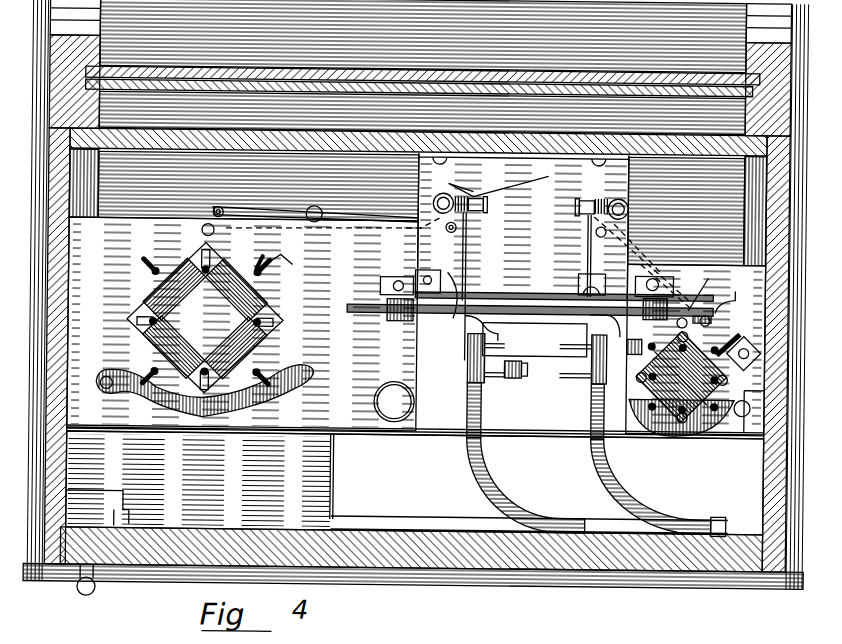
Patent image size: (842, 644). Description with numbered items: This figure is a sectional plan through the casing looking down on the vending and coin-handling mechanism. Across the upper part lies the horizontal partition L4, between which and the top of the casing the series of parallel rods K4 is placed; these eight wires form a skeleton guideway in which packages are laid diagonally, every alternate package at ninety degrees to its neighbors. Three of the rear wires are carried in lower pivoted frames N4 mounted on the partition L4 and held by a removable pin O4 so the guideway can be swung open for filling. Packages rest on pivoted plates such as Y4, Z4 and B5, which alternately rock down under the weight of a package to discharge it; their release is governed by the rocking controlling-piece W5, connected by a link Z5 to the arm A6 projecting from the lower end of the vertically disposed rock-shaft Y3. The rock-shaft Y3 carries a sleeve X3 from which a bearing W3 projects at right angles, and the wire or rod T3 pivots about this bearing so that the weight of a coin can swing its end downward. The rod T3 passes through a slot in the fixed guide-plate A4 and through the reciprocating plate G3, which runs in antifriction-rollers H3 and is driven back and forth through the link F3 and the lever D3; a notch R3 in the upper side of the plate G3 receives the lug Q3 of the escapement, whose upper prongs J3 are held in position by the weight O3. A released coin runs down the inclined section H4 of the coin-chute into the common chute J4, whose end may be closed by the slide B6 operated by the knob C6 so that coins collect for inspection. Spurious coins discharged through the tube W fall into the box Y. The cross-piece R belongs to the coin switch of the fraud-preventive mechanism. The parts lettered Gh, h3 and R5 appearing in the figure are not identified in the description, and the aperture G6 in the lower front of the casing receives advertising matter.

The aperture G6 is at (280, 92).
The casing plate Gh is at (282, 153).
The sleeve X3 is at (450, 190).
The pivot pin h3 is at (432, 203).
The bearing W3 is at (472, 222).
The rock-shaft Y3 is at (575, 198).
The plate Z4 is at (497, 189).
The rod T3 is at (467, 258).
The arm A6 is at (446, 222).
The notch R3 is at (450, 276).
The antifriction-rollers H3 is at (400, 321).
The guide-plate A4 is at (508, 288).
The reciprocating plate G3 is at (358, 305).
The lug Q3 is at (466, 326).
The upper prongs J3 is at (500, 352).
The weight O3 is at (523, 370).
The inclined section H4 is at (513, 496).
The common chute J4 is at (378, 524).
The horizontal partition L4 is at (428, 424).
The box Y is at (199, 480).
The slide B6 is at (105, 513).
The knob C6 is at (96, 594).
The tube W is at (375, 404).
The pivoted frames N4 is at (258, 405).
The parallel rods K4 is at (150, 303).
The plate Y4 is at (174, 289).
The plate B5 is at (236, 289).
The coil R5 is at (235, 347).
The controlling-piece W5 is at (200, 232).
The link Z5 is at (316, 224).
The cross-piece R is at (292, 266).
The removable pin O4 is at (268, 262).
The link F3 is at (690, 303).
The lever D3 is at (718, 310).